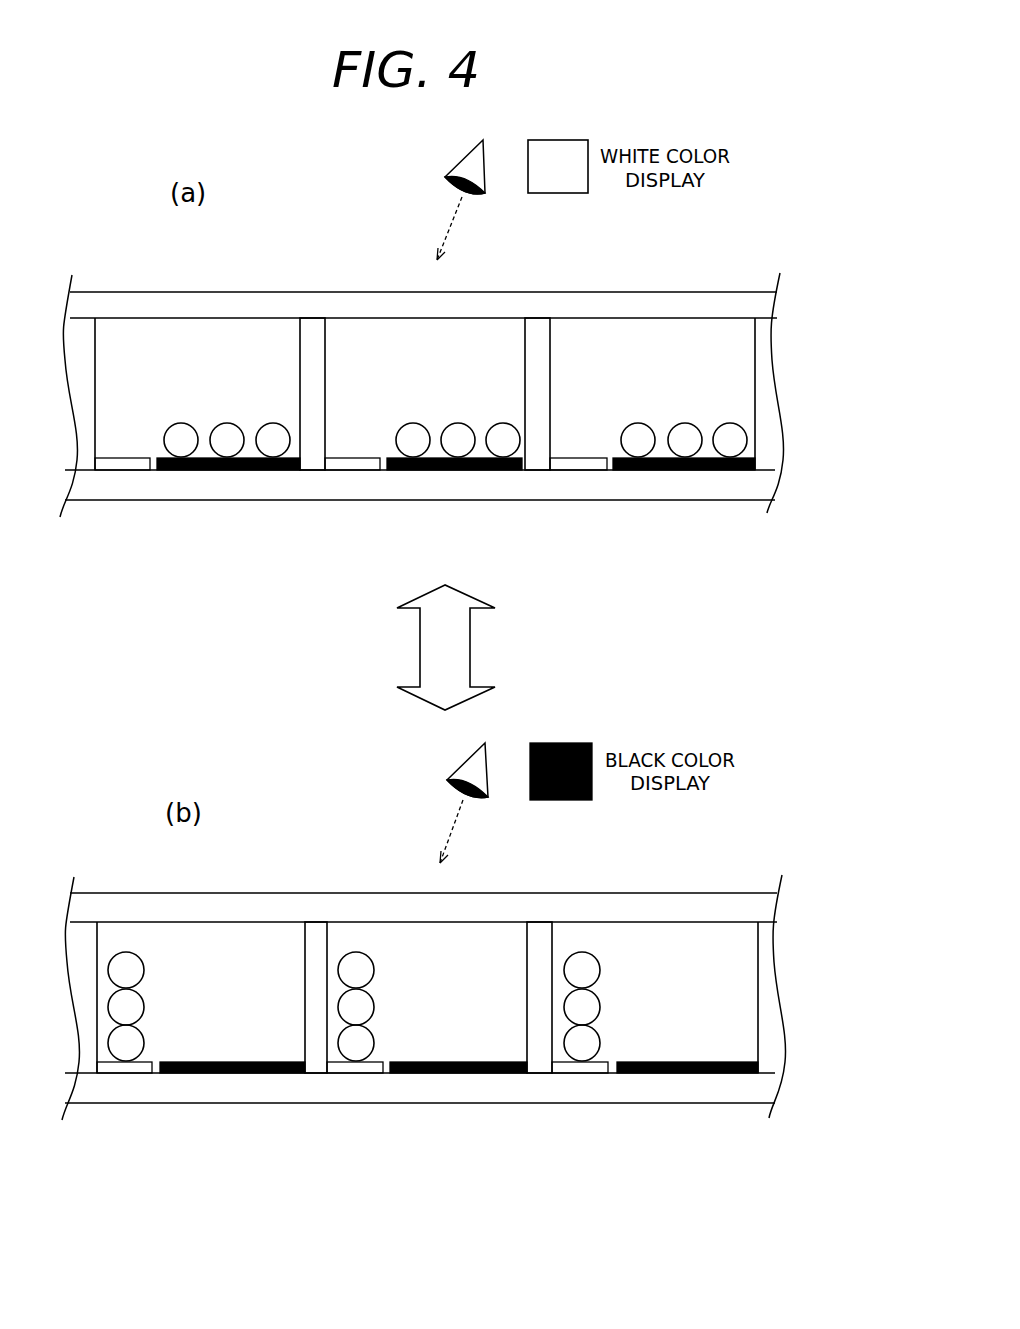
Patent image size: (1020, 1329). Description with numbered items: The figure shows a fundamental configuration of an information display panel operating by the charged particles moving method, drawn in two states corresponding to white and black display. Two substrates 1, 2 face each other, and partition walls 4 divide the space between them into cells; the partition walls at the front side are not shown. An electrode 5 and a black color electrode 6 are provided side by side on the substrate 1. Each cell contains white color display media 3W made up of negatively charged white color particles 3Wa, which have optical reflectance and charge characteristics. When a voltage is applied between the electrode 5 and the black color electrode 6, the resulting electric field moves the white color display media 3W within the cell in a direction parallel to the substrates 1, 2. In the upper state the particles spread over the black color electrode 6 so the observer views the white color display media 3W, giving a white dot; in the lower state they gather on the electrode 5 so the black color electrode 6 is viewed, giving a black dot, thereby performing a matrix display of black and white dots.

The substrate 1 is at (345, 483).
The substrate 2 is at (352, 302).
The white color display media 3W is at (805, 420).
The white color particle 3Wa is at (685, 432).
The partition wall 4 is at (85, 452).
The electrode 5 is at (123, 463).
The black color electrode 6 is at (223, 468).